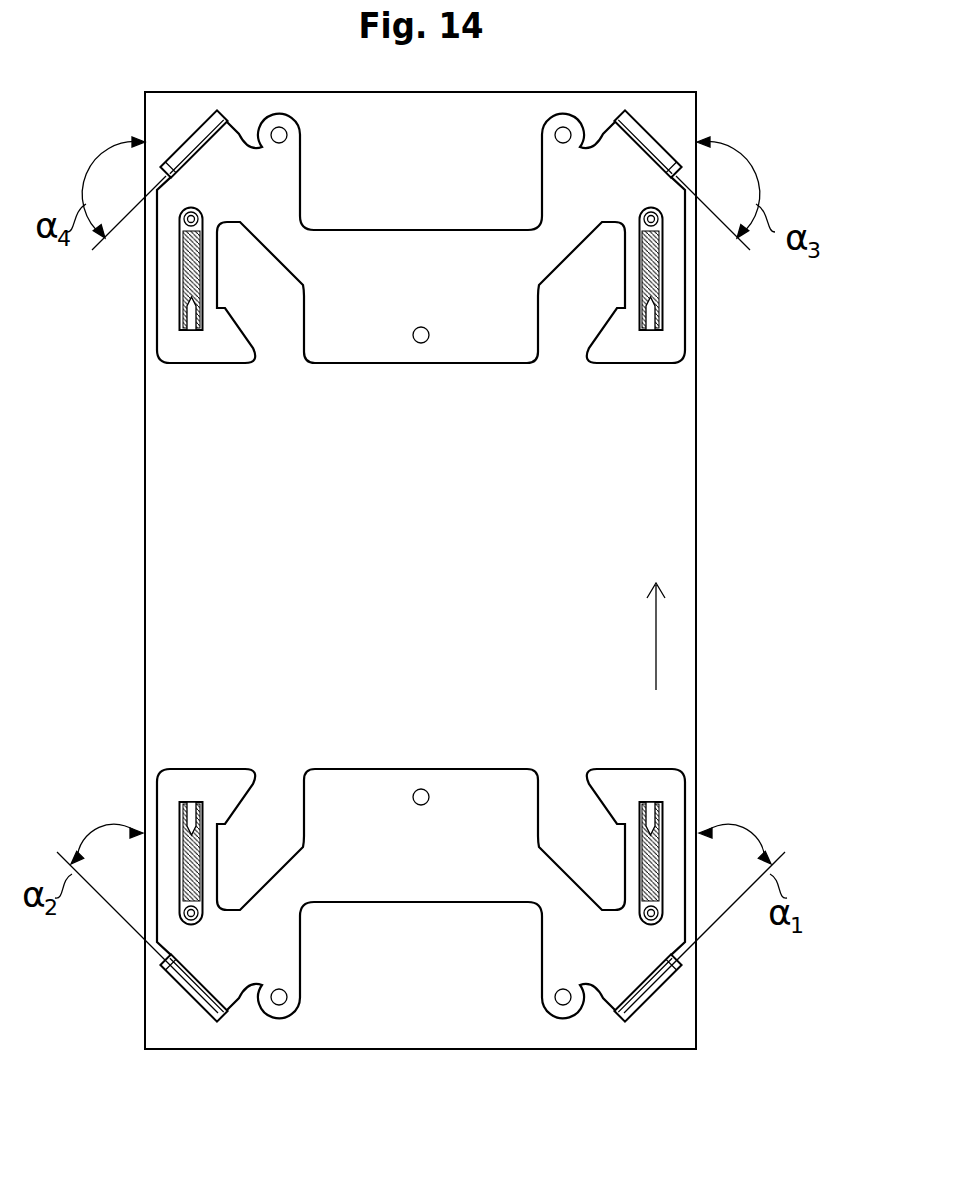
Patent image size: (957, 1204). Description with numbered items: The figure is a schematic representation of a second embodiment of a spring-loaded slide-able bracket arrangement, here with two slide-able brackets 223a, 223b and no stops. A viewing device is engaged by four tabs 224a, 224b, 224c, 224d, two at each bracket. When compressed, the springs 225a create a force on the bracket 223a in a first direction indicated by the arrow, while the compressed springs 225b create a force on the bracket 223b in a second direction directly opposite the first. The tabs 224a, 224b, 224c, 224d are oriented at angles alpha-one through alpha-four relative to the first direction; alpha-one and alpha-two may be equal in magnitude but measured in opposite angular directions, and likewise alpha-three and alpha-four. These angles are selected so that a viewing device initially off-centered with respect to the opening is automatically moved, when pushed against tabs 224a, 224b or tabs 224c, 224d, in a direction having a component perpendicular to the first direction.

The slide-able bracket 223a is at (412, 911).
The slide-able bracket 223b is at (380, 364).
The tab 224a is at (657, 993).
The tab 224b is at (187, 993).
The tab 224c is at (650, 131).
The tab 224d is at (192, 131).
The springs 225a is at (183, 845).
The springs 225b is at (185, 273).